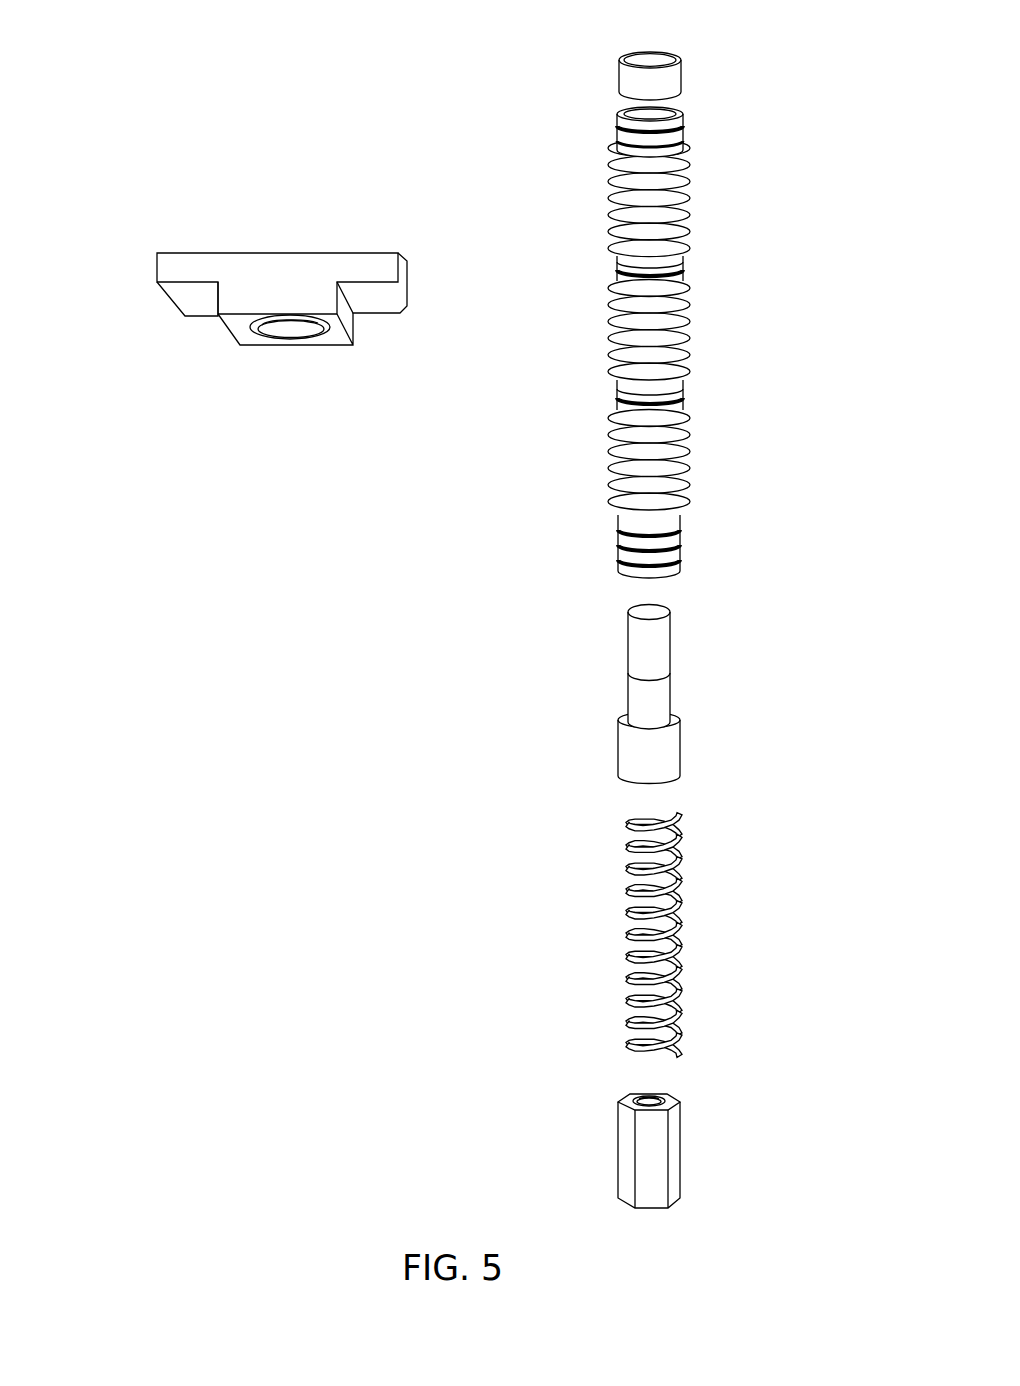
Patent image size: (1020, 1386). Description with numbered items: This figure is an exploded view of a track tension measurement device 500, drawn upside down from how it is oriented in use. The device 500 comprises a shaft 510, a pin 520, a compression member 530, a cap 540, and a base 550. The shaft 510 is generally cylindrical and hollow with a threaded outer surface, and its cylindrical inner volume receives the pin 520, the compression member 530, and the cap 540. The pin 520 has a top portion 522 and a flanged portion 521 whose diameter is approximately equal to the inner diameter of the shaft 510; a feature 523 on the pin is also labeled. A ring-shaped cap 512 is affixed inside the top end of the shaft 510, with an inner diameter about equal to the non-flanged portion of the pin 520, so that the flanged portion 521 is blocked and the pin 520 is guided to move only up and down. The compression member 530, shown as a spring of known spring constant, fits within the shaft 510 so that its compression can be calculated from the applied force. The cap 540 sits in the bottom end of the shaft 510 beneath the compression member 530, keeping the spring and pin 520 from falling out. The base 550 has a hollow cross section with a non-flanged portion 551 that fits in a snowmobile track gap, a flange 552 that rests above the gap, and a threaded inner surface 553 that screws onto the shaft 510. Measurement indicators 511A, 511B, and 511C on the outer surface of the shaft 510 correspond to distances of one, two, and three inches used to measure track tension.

The device 500 is at (115, 83).
The shaft 510 is at (690, 480).
The measurement indicator 511A is at (685, 133).
The measurement indicator 511B is at (690, 258).
The measurement indicator 511C is at (690, 388).
The cap 512 is at (687, 85).
The pin 520 is at (678, 678).
The flanged portion 521 is at (685, 752).
The top portion 522 is at (677, 622).
The pin groove 523 is at (613, 672).
The compression member 530 is at (682, 898).
The cap 540 is at (692, 1135).
The base 550 is at (333, 240).
The non-flanged portion 551 is at (368, 345).
The flange 552 is at (177, 241).
The inner surface 553 is at (283, 343).